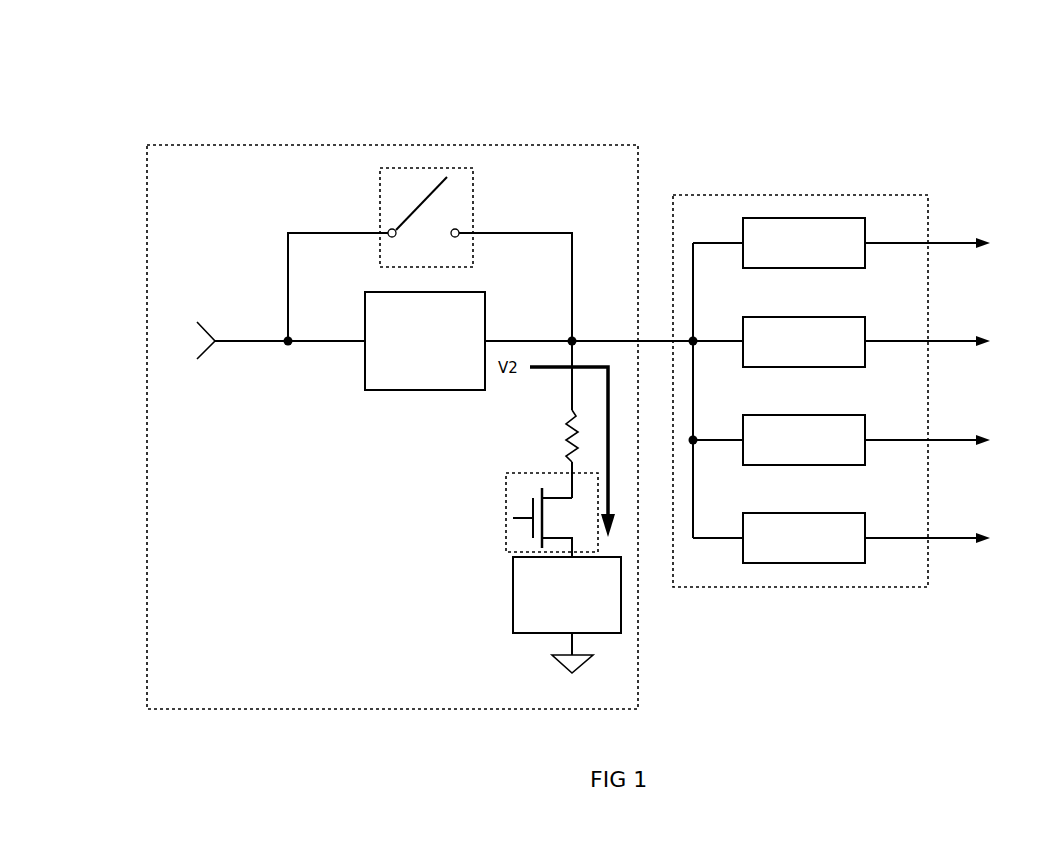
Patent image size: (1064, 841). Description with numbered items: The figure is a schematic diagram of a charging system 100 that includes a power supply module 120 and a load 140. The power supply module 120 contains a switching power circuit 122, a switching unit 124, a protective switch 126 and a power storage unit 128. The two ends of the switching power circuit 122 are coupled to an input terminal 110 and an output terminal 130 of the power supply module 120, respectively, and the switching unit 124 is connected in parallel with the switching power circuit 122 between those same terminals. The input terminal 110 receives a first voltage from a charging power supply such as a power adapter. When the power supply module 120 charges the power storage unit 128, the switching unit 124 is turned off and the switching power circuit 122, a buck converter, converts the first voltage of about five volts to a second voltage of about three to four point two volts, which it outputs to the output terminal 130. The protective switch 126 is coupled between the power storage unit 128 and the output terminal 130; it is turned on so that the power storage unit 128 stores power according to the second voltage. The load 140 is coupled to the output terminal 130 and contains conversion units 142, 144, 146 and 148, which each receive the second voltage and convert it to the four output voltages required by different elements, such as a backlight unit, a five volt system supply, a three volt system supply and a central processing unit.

The charging system 100 is at (35, 47).
The input terminal 110 is at (287, 345).
The power supply module 120 is at (393, 145).
The switching power circuit 122 is at (554, 341).
The switching unit 124 is at (380, 230).
The protective switch 126 is at (506, 490).
The power storage unit 128 is at (513, 593).
The output terminal 130 is at (574, 336).
The load 140 is at (795, 195).
The conversion unit 142 is at (884, 243).
The conversion unit 144 is at (884, 342).
The conversion unit 146 is at (884, 440).
The conversion unit 148 is at (884, 538).